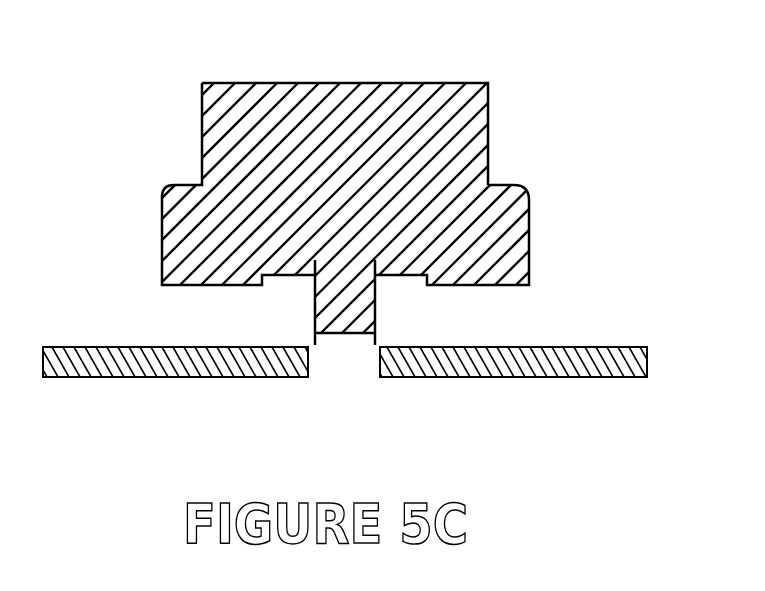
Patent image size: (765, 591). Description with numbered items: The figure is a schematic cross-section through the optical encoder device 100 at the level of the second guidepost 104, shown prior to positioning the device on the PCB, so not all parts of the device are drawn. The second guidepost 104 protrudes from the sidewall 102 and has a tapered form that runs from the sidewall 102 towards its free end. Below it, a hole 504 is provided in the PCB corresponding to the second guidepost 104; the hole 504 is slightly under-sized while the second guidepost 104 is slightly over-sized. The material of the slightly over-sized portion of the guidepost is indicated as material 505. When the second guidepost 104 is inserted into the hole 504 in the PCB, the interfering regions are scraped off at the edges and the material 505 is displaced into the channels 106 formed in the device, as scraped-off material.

The optical encoder device 100 is at (462, 92).
The sidewall 102 is at (475, 285).
The second guidepost 104 is at (338, 318).
The channels 106 is at (377, 265).
The hole 504 is at (355, 358).
The material of the slightly over-sized portion 505 is at (310, 330).
The element PCB is at (84, 378).